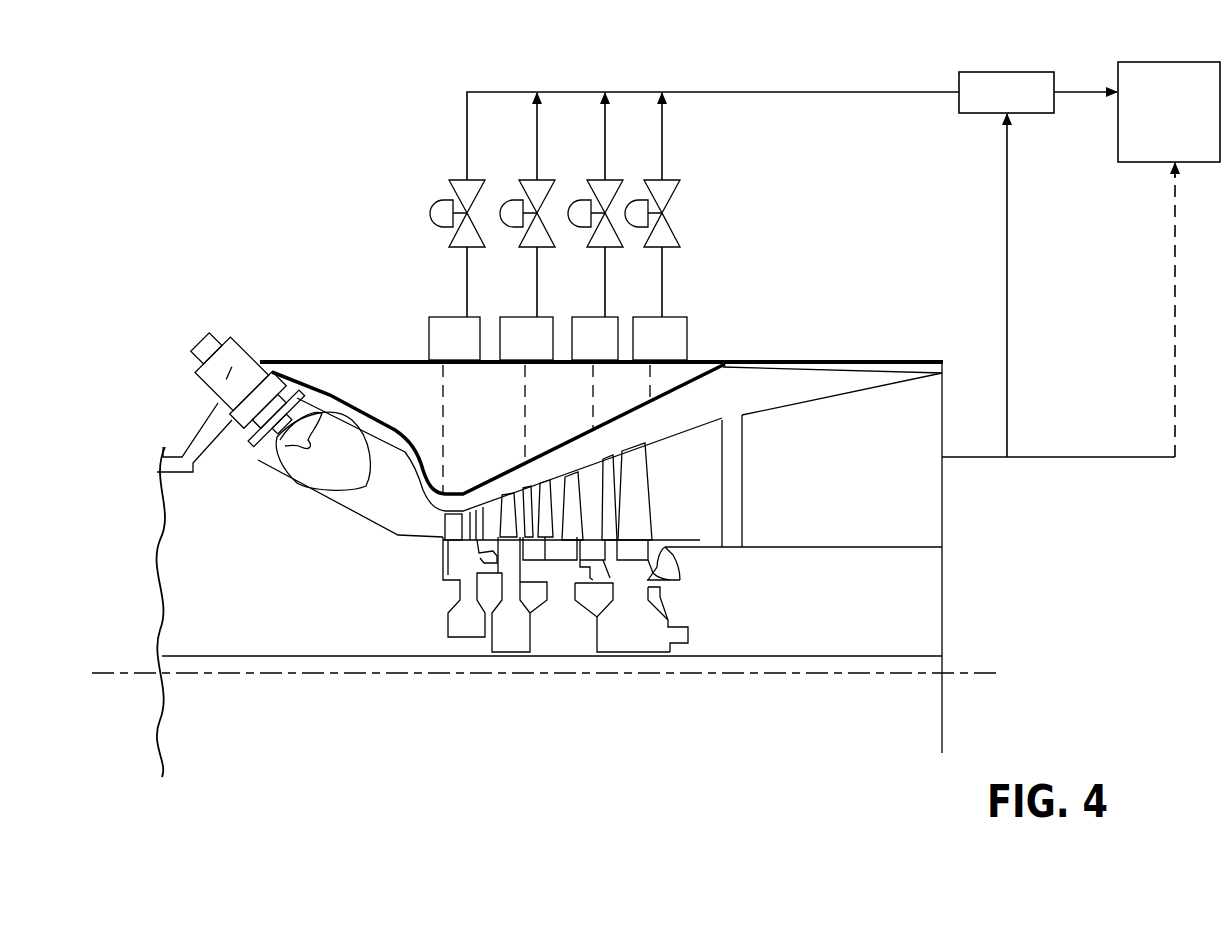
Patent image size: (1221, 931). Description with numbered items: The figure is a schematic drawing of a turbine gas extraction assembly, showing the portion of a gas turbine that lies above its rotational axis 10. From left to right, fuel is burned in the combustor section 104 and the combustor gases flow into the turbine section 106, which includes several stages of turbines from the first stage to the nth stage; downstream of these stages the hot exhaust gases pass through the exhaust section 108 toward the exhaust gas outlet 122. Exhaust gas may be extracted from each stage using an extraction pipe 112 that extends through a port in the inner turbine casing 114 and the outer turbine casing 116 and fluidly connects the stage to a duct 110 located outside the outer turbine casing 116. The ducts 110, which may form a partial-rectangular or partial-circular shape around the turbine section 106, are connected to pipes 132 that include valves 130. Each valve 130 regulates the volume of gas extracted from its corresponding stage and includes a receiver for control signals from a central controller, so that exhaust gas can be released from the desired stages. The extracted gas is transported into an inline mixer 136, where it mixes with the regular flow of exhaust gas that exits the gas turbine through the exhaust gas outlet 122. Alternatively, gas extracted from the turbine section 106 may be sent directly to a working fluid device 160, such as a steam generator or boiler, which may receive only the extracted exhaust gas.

The rotational axis 10 is at (278, 677).
The combustor section 104 is at (200, 343).
The turbine section 106 is at (729, 687).
The exhaust section 108 is at (940, 690).
The duct 110 is at (435, 316).
The extraction pipe 112 is at (438, 385).
The inner turbine casing 114 is at (370, 402).
The outer turbine casing 116 is at (299, 360).
The exhaust gas outlet 122 is at (1008, 285).
The valves 130 is at (450, 192).
The pipes 132 is at (663, 137).
The inline mixer 136 is at (1018, 72).
The working fluid device 160 is at (1169, 112).